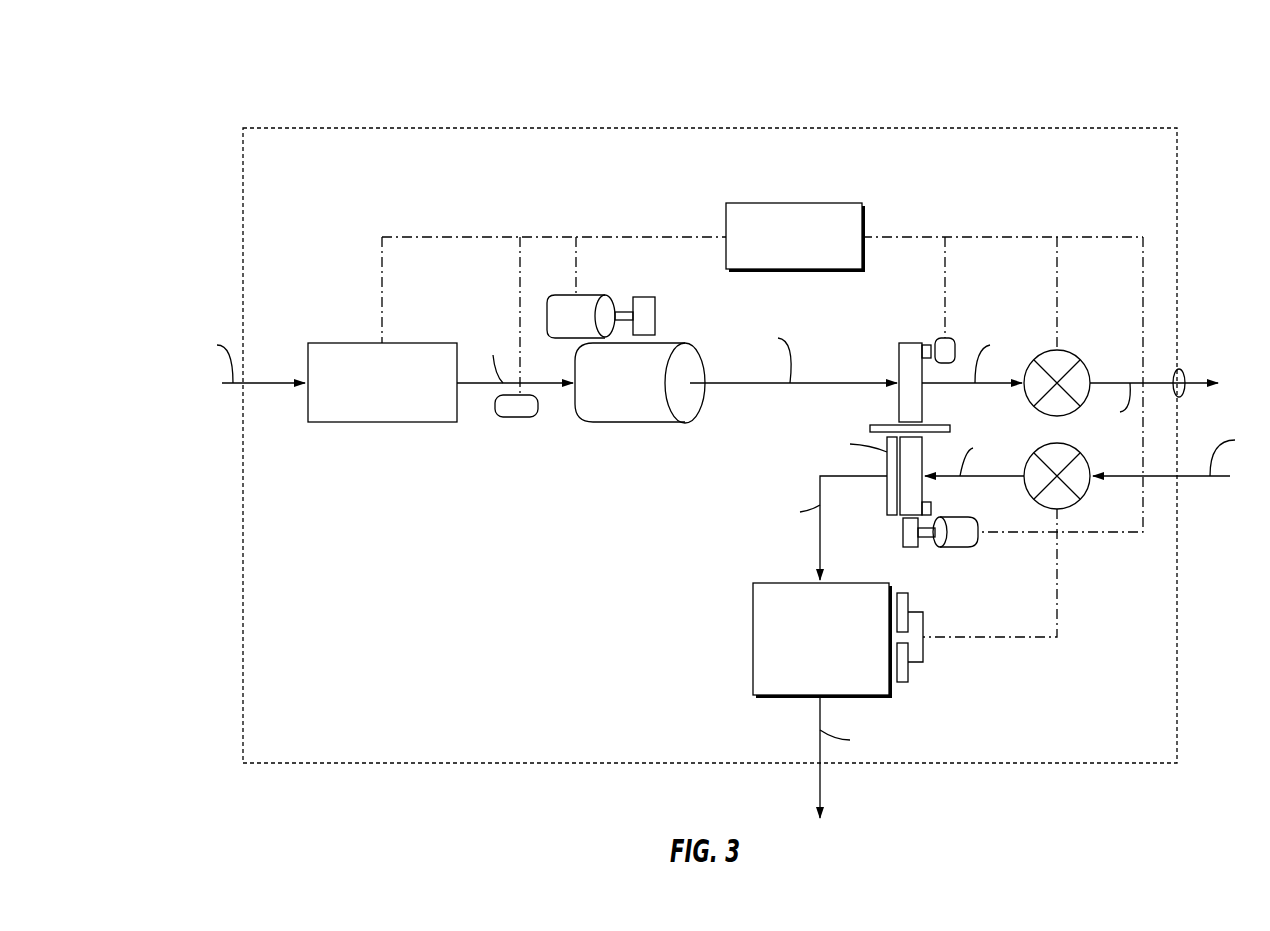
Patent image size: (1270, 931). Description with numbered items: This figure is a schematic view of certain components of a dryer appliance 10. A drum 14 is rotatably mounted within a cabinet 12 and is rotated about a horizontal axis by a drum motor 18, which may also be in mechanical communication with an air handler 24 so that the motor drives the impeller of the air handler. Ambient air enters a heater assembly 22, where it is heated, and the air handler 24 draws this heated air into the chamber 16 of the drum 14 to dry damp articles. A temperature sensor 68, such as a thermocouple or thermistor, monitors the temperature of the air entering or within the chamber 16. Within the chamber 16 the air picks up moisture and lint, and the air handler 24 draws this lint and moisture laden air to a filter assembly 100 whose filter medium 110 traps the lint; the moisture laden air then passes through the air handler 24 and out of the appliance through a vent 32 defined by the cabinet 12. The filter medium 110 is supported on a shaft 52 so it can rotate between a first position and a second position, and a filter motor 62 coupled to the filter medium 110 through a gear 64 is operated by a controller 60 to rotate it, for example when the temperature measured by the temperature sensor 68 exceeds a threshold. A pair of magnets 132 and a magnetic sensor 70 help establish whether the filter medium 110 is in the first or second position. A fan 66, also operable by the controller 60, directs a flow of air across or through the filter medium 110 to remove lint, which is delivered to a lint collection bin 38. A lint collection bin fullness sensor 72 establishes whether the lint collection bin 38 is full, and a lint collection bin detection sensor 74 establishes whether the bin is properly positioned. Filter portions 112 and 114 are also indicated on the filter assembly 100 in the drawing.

The dryer appliance 10 is at (212, 112).
The cabinet 12 is at (1180, 196).
The drum 14 is at (640, 415).
The chamber 16 is at (685, 402).
The drum motor 18 is at (590, 305).
The heater assembly 22 is at (345, 343).
The air handler 24 is at (1070, 355).
The vent 32 is at (1185, 372).
The lint collection bin 38 is at (753, 612).
The shaft 52 is at (952, 431).
The controller 60 is at (810, 203).
The filter motor 62 is at (960, 547).
The gear 64 is at (910, 547).
The fan 66 is at (1075, 452).
The temperature sensor 68 is at (518, 420).
The magnetic sensor 70 is at (955, 345).
The lint collection bin fullness sensor 72 is at (910, 600).
The lint collection bin detection sensor 74 is at (908, 680).
The filter assembly 100 is at (911, 398).
The filter medium 110 is at (899, 400).
The filter inlet side 112 is at (897, 362).
The second filter portion 114 is at (895, 500).
The magnets 132 is at (927, 345).